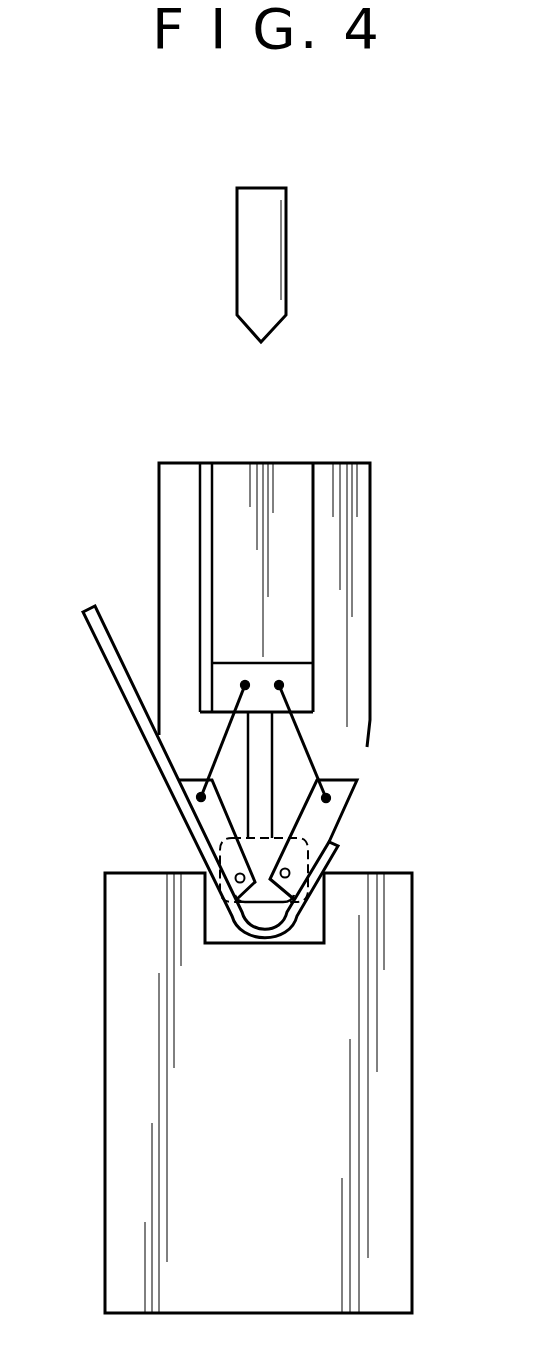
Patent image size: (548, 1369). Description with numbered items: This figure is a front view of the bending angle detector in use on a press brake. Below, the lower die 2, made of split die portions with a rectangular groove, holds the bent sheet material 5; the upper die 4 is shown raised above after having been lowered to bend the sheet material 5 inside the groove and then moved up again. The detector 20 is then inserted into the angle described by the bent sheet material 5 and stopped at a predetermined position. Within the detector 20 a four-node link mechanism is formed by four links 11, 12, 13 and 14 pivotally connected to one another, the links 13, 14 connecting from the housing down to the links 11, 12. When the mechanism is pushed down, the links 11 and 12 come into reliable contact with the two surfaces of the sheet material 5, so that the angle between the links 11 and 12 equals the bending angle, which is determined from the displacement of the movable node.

The lower die 2 is at (265, 1130).
The upper die 4 is at (268, 256).
The sheet material 5 is at (97, 640).
The link 11 is at (210, 817).
The link 12 is at (328, 817).
The link 13 is at (219, 750).
The link 14 is at (303, 745).
The detector 20 is at (382, 585).